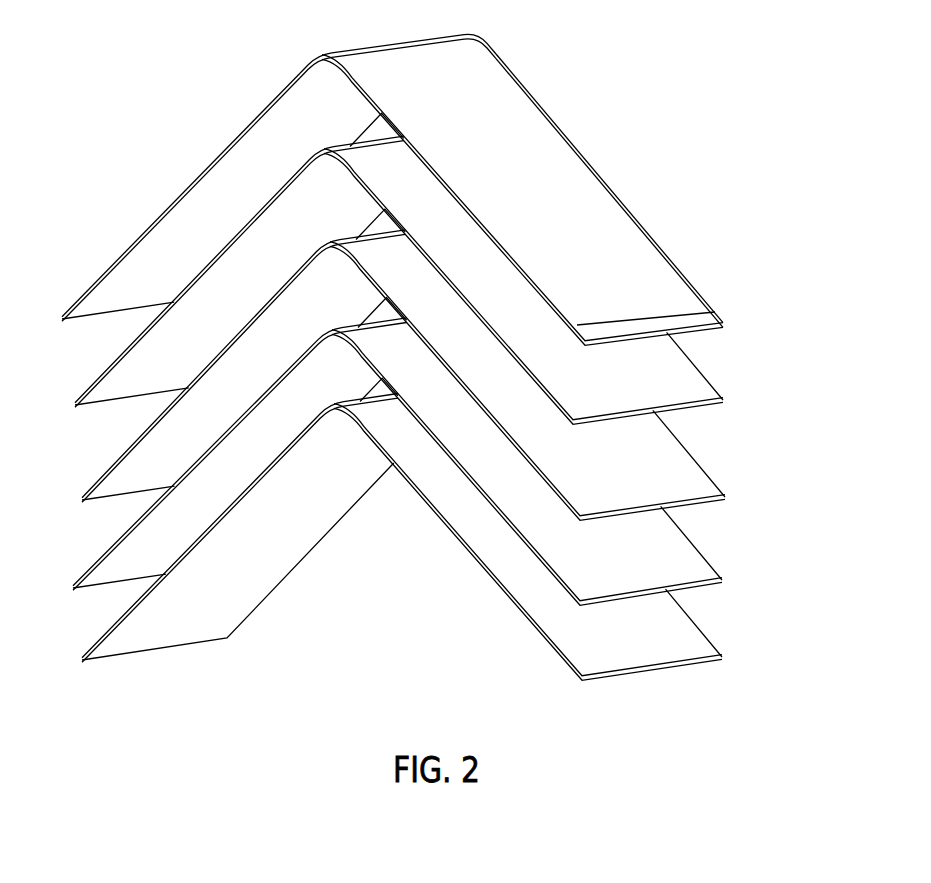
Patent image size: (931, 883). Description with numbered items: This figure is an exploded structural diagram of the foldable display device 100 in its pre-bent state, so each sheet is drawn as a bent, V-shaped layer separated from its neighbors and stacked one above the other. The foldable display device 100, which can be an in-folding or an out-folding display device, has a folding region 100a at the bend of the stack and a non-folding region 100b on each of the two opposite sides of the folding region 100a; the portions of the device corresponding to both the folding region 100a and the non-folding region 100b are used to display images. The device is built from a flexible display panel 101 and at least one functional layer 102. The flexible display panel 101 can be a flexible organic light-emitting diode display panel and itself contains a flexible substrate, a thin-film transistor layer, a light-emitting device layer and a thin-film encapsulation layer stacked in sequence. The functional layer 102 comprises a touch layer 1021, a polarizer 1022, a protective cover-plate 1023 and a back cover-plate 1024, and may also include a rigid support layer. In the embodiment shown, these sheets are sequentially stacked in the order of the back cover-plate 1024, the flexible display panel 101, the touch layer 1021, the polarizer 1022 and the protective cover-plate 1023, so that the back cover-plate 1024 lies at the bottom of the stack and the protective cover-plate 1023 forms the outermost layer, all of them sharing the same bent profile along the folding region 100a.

The foldable display device 100 is at (381, 660).
The folding region 100a is at (306, 50).
The non-folding region 100b is at (176, 163).
The flexible display panel 101 is at (696, 568).
The functional layer 102 is at (765, 162).
The touch layer 1021 is at (699, 484).
The polarizer 1022 is at (697, 387).
The protective cover-plate 1023 is at (429, 194).
The back cover-plate 1024 is at (696, 644).